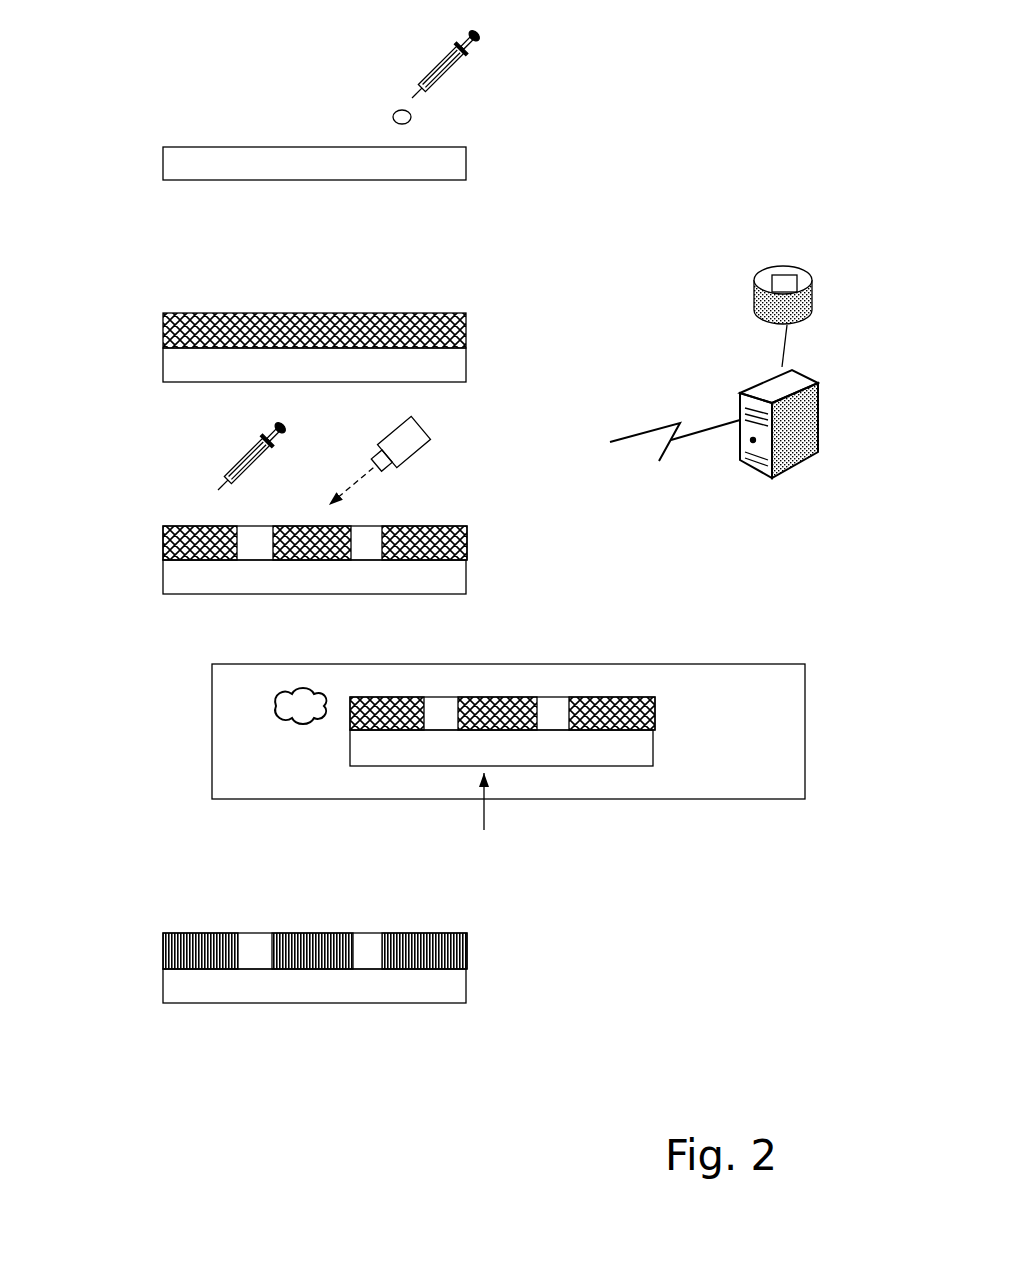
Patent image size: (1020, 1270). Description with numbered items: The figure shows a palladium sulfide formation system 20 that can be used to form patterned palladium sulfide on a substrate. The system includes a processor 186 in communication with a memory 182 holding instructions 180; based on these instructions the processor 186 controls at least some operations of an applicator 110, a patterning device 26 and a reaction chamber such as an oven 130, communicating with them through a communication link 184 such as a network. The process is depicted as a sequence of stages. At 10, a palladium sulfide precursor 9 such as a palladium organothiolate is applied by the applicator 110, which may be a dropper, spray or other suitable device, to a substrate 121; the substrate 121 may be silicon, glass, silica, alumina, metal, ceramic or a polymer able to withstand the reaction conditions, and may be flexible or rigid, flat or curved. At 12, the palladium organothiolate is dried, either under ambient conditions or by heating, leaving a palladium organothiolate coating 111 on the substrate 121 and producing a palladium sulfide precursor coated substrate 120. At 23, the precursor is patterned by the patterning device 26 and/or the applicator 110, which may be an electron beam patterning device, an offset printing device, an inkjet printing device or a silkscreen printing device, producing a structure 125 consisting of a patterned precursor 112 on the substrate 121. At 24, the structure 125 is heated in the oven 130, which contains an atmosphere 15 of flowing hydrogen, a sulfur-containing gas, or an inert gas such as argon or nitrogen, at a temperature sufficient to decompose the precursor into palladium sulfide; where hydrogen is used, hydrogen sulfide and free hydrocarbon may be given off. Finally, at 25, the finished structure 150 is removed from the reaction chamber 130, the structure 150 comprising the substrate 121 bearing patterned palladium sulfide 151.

The palladium sulfide precursor 9 is at (393, 110).
The palladium sulfide precursor application step 10 is at (142, 159).
The drying step 12 is at (148, 339).
The atmosphere 15 is at (303, 700).
The palladium sulfide formation system 20 is at (712, 199).
The patterning step 23 is at (140, 553).
The heating step 24 is at (195, 713).
The removal step 25 is at (148, 960).
The patterning device 26 is at (423, 452).
The applicator 110 is at (423, 63).
The palladium organothiolate coating 111 is at (453, 330).
The patterned precursor 112 is at (440, 542).
The palladium sulfide precursor coated substrate 120 is at (528, 310).
The substrate 121 is at (473, 162).
The patterned precursor structure 125 is at (516, 524).
The oven 130 is at (495, 663).
The finished structure 150 is at (530, 933).
The patterned palladium sulfide 151 is at (468, 945).
The instructions 180 is at (773, 275).
The memory 182 is at (767, 323).
The communication link 184 is at (675, 455).
The processor 186 is at (765, 480).